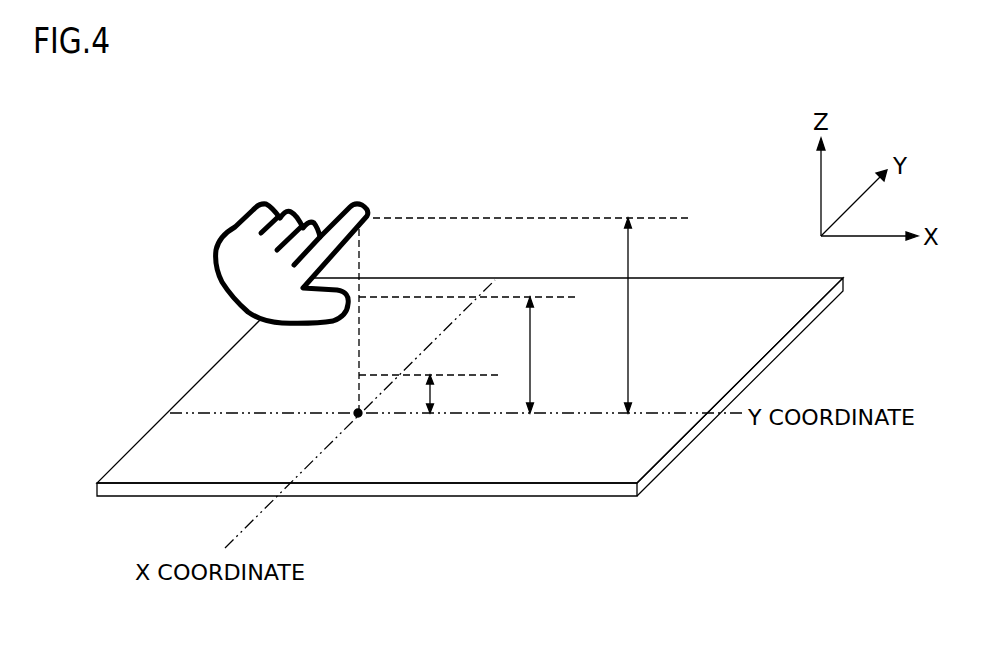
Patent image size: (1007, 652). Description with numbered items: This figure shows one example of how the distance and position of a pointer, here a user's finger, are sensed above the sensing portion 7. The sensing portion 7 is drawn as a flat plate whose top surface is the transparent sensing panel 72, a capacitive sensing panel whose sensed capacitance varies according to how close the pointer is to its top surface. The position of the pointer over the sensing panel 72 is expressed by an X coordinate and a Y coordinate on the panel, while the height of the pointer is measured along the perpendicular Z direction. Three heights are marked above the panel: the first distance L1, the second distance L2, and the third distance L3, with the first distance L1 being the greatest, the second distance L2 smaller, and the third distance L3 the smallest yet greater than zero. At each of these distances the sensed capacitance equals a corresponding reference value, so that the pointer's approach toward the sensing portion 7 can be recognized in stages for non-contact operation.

The sensing portion 7 is at (637, 496).
The sensing panel 72 is at (399, 475).
The first distance L1 is at (668, 315).
The second distance L2 is at (569, 355).
The third distance L3 is at (469, 394).